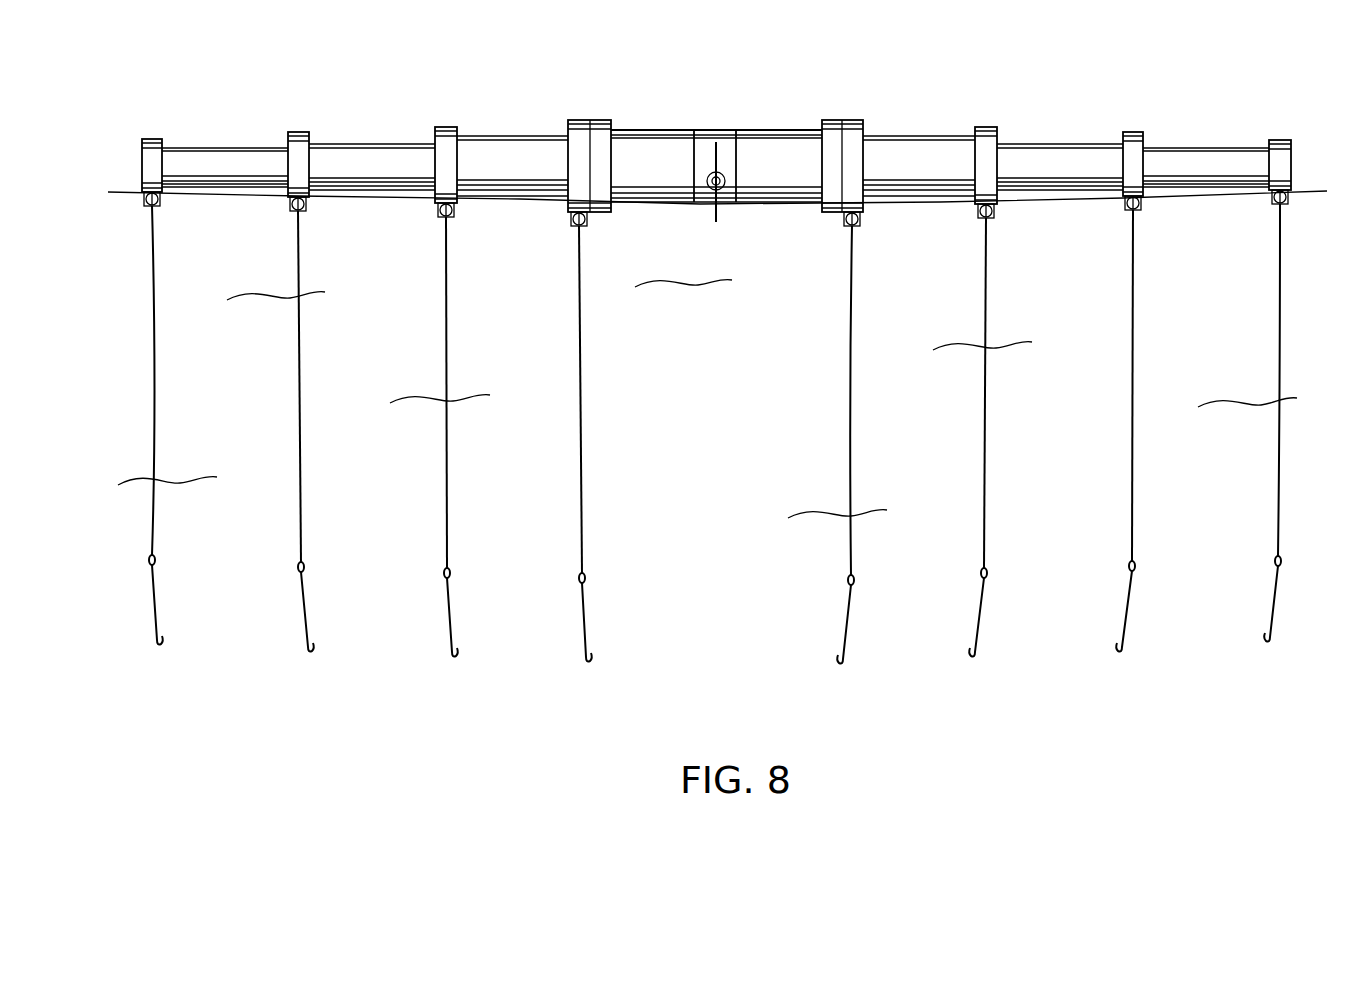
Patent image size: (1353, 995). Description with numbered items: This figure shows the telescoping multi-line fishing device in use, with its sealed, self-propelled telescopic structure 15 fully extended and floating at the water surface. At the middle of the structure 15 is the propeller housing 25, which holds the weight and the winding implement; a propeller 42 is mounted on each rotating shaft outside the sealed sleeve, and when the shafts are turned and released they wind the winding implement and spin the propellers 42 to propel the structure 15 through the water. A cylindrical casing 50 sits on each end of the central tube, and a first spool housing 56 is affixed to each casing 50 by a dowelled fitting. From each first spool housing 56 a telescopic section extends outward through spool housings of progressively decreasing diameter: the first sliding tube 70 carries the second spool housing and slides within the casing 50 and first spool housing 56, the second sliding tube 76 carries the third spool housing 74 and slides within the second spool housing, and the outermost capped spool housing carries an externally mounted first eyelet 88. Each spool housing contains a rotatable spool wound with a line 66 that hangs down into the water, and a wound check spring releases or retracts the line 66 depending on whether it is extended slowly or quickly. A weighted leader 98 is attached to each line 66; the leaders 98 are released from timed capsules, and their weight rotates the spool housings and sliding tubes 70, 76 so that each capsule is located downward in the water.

The telescopic structure 15 is at (770, 120).
The propeller housing 25 is at (718, 132).
The propeller 42 is at (716, 214).
The cylindrical casing 50 is at (598, 120).
The first spool housing 56 is at (855, 120).
The line 66 is at (153, 243).
The first sliding tube 70 is at (915, 137).
The third spool housing 74 is at (298, 132).
The second sliding tube 76 is at (377, 145).
The first eyelet 88 is at (141, 139).
The weighted leader 98 is at (157, 597).